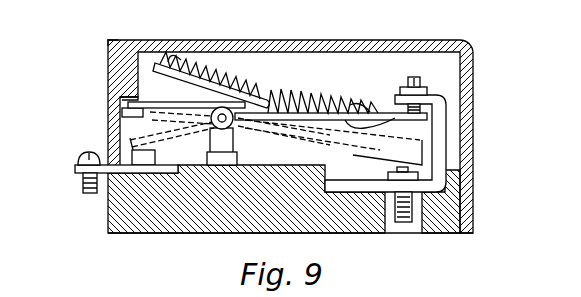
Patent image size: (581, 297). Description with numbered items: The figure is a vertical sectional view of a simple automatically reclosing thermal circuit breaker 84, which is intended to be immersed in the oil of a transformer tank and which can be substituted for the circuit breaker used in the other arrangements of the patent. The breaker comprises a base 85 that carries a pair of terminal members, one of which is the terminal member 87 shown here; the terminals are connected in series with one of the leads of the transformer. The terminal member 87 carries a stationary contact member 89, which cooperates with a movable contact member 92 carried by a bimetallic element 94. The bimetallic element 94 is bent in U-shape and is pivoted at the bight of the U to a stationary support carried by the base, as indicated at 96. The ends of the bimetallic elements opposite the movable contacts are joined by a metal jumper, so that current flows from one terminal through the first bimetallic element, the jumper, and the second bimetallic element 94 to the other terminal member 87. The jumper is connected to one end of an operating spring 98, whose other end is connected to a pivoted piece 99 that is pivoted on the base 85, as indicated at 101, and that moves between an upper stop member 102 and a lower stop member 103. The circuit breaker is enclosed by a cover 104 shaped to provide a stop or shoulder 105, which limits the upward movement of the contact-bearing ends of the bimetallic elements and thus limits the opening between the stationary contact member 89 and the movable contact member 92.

The thermal circuit breaker 84 is at (442, 33).
The base 85 is at (163, 233).
The terminal member 87 is at (82, 186).
The stationary contact member 89 is at (157, 156).
The movable contact member 92 is at (108, 122).
The bimetallic element 94 is at (180, 98).
The stationary support pivot 96 is at (300, 234).
The operating spring 98 is at (313, 140).
The pivoted piece 99 is at (380, 131).
The pivot 101 is at (223, 129).
The upper stop member 102 is at (446, 104).
The lower stop member 103 is at (442, 170).
The cover 104 is at (108, 44).
The stop or shoulder 105 is at (128, 95).